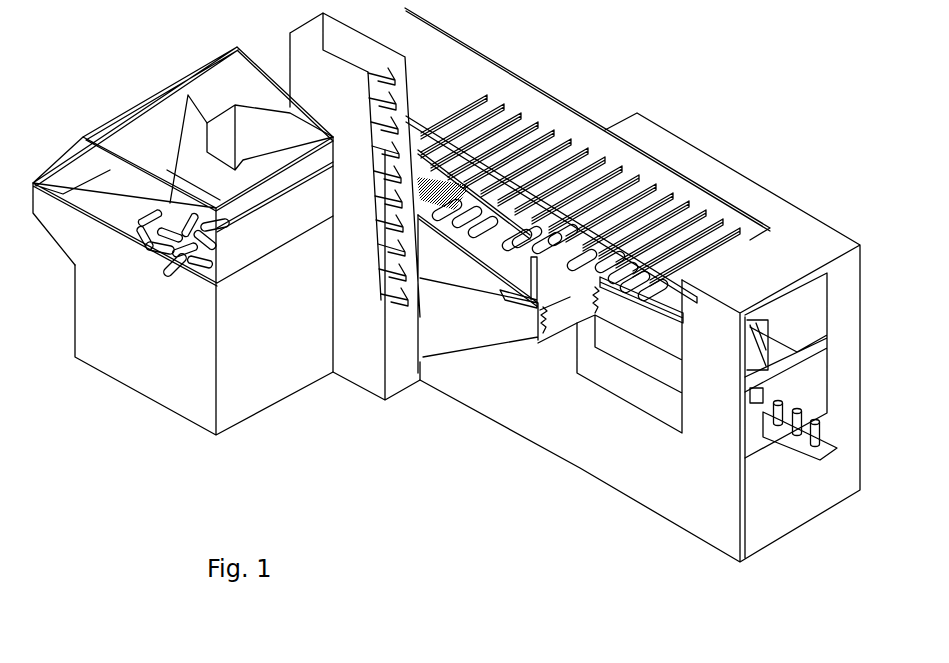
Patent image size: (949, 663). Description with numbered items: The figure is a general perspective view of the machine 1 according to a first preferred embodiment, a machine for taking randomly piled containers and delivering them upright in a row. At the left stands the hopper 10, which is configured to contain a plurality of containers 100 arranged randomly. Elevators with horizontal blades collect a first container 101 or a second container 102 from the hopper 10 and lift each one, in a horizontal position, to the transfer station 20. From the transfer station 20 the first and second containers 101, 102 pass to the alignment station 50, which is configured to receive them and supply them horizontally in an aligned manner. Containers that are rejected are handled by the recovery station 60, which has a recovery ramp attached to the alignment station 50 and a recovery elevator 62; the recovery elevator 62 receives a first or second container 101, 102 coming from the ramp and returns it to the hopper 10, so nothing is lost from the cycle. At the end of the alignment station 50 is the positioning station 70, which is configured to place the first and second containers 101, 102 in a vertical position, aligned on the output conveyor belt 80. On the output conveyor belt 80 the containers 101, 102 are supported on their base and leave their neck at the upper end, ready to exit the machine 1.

The machine 1 is at (586, 97).
The hopper 10 is at (147, 145).
The transfer station 20 is at (443, 160).
The alignment station 50 is at (527, 265).
The recovery station 60 is at (485, 364).
The recovery elevator 62 is at (385, 258).
The positioning station 70 is at (648, 322).
The output conveyor belt 80 is at (778, 446).
The containers 100 is at (127, 230).
The first container 101 is at (588, 162).
The second container 102 is at (522, 235).